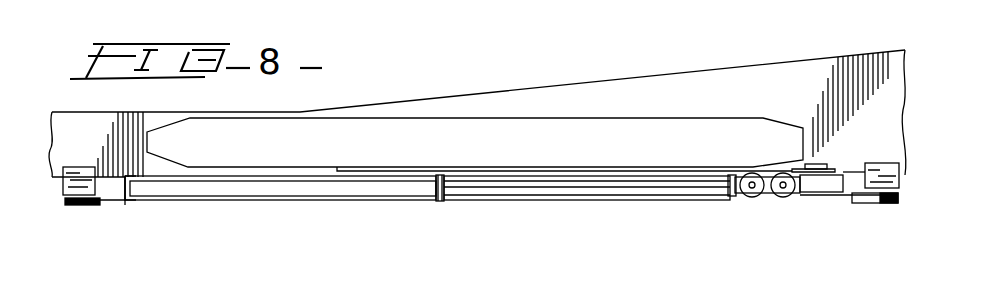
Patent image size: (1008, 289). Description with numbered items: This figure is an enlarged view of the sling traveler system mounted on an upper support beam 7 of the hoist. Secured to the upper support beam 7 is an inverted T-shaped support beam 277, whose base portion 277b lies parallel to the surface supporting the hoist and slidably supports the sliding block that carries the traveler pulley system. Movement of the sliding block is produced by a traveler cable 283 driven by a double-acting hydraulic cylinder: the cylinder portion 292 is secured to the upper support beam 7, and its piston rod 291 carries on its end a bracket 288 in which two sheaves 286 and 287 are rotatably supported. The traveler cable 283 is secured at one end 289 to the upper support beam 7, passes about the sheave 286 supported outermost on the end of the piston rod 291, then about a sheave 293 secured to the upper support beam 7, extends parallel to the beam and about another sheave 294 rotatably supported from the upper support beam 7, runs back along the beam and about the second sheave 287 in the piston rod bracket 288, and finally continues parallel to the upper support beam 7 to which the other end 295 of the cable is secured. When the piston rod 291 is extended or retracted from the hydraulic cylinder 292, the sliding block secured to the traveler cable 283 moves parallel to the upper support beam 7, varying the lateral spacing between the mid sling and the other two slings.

The upper support beam 7 is at (760, 73).
The traveler cable 283 is at (798, 167).
The one end of the traveler cable 289 is at (818, 167).
The other end of the traveler cable 295 is at (350, 170).
The sheave 294 is at (102, 206).
The base portion of the inverted T-shaped support beam 277b is at (125, 201).
The cylinder portion of the double-acting hydraulic cylinder 292 is at (232, 190).
The inverted T-shaped support beam 277 is at (418, 202).
The piston rod 291 is at (655, 196).
The sheave 287 is at (748, 196).
The bracket 288 is at (767, 184).
The sheave 286 is at (780, 196).
The sheave 293 is at (858, 204).